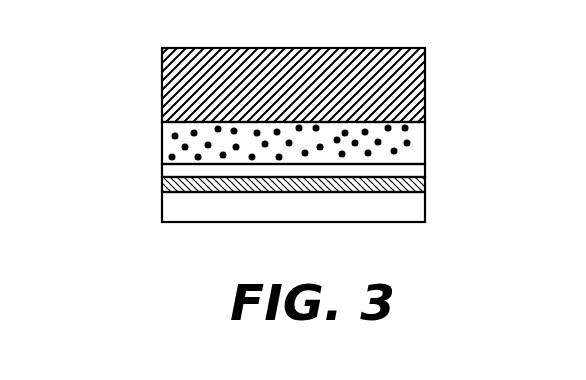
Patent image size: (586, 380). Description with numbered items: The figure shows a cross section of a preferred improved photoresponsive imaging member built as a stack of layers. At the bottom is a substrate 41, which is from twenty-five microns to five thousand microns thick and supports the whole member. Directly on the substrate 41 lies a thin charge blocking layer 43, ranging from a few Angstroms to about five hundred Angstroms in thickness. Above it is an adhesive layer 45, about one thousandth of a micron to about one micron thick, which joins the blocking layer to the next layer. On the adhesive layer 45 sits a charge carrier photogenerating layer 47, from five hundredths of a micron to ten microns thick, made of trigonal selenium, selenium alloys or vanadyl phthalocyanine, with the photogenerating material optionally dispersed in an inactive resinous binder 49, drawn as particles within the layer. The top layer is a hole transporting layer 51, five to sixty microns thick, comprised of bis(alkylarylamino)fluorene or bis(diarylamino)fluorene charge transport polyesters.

The hole transporting layer 51 is at (161, 78).
The charge carrier photogenerating layer 47 is at (161, 138).
The inactive resinous binder 49 is at (410, 143).
The adhesive layer 45 is at (425, 173).
The charge blocking layer 43 is at (161, 185).
The substrate 41 is at (425, 202).